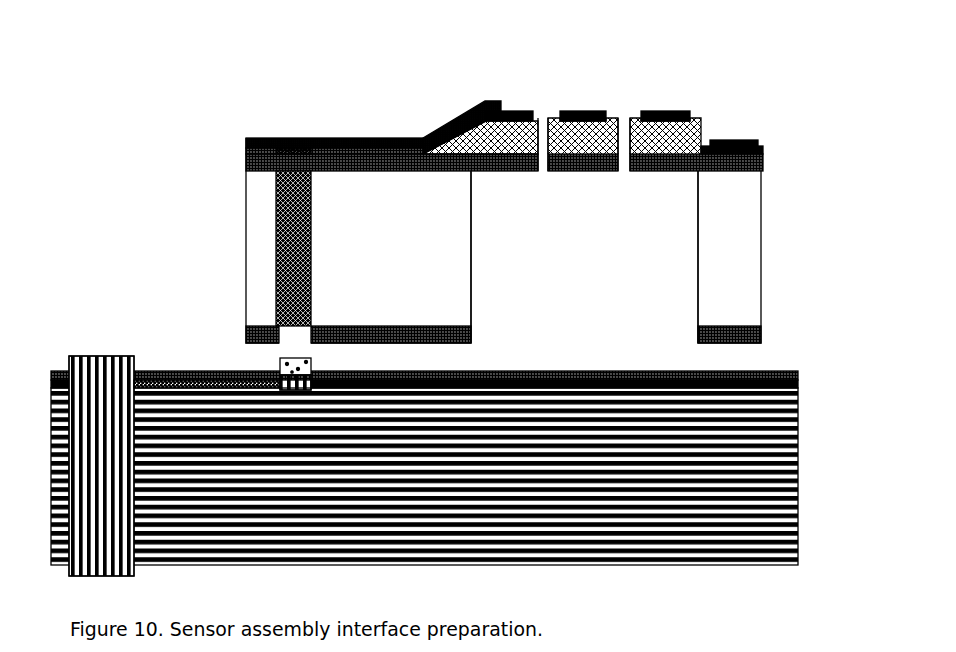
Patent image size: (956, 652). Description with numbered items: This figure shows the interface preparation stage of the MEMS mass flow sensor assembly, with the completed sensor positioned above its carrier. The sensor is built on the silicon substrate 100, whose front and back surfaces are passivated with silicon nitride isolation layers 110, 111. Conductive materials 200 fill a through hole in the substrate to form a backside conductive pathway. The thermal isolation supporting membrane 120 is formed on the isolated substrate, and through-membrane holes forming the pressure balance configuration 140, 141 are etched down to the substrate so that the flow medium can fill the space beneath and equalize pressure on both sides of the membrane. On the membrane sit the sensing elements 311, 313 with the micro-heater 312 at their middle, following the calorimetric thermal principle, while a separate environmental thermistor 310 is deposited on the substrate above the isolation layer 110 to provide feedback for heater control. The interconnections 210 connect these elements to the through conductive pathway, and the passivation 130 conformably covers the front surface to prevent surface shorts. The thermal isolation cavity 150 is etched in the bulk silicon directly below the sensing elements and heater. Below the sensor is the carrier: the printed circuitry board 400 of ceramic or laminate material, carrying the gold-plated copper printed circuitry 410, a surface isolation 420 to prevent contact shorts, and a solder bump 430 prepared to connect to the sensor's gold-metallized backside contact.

The silicon substrate 100 is at (707, 236).
The silicon nitride isolation layer 110 is at (728, 152).
The silicon nitride isolation layer 111 is at (750, 323).
The thermal isolation supporting membrane 120 is at (687, 105).
The passivation 130 is at (728, 132).
The pressure balance configuration 140 is at (617, 105).
The pressure balance configuration 141 is at (536, 105).
The thermal isolation cavity 150 is at (615, 280).
The conductive materials 200 is at (270, 247).
The interconnections 210 is at (462, 92).
The thermistor 310 is at (755, 133).
The sensing element 311 is at (658, 103).
The micro-heater 312 is at (576, 103).
The sensing element 313 is at (500, 103).
The printed circuitry board 400 is at (155, 432).
The printed circuitry 410 is at (95, 383).
The surface isolation 420 is at (173, 365).
The solder bump 430 is at (273, 355).